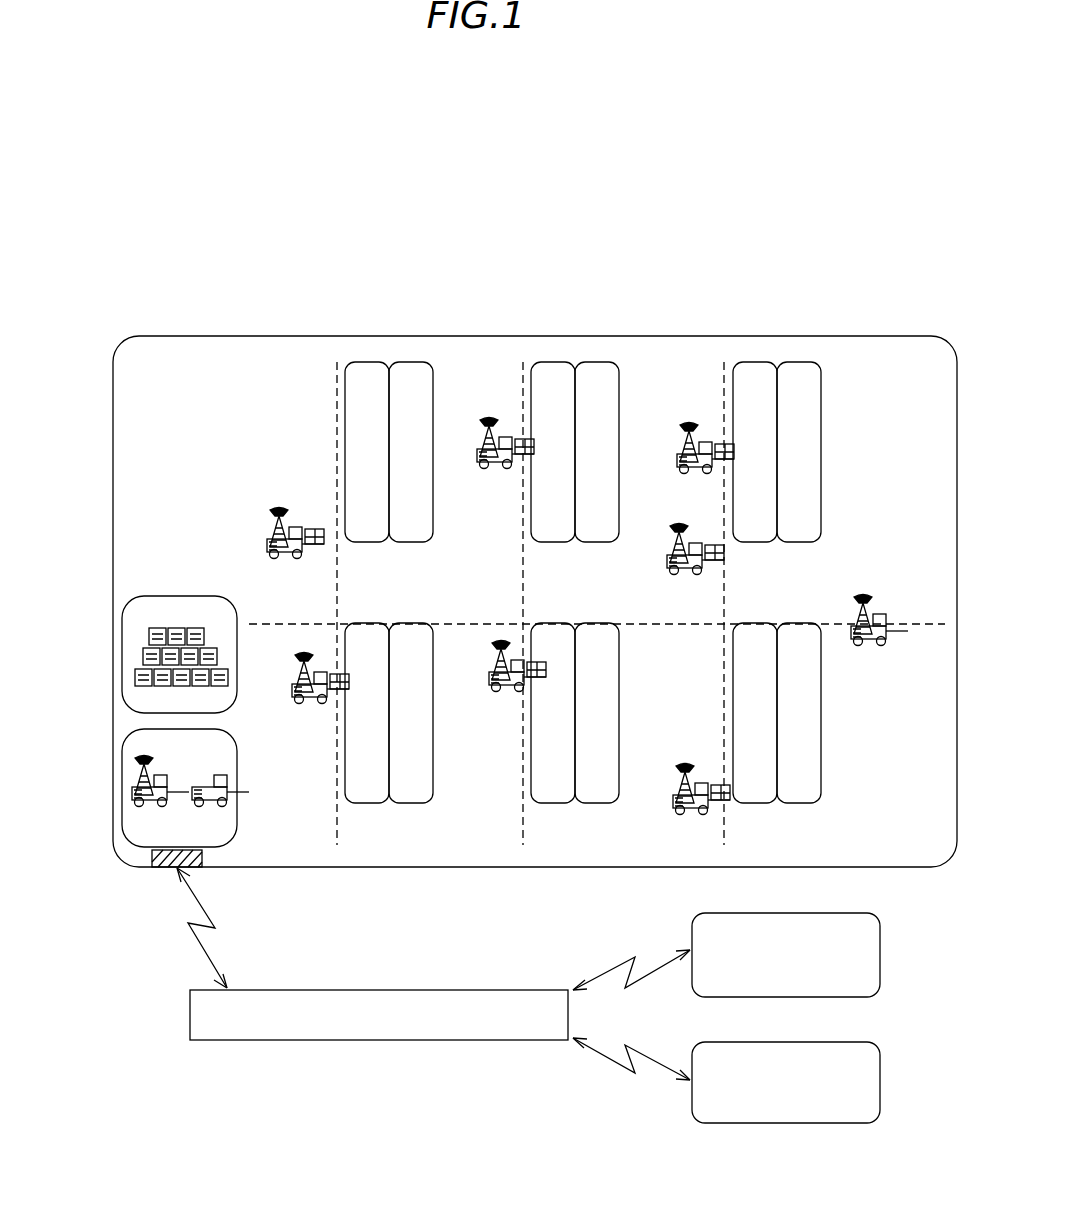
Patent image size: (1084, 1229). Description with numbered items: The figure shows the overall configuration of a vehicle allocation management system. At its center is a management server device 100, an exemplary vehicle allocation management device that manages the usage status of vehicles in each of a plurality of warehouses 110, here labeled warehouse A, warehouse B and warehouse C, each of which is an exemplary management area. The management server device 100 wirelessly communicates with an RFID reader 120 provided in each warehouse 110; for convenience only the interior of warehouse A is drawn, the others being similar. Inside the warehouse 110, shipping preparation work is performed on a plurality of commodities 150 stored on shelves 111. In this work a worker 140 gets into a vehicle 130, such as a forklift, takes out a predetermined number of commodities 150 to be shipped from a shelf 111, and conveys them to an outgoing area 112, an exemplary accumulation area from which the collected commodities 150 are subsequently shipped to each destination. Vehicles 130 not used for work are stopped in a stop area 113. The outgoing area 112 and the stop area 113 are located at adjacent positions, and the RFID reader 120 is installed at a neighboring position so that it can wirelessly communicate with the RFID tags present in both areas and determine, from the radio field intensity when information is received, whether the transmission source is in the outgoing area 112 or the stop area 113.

The management server device 100 is at (323, 1041).
The warehouse 110 is at (670, 336).
The shelf 111 is at (403, 362).
The outgoing area 112 is at (143, 654).
The stop area 113 is at (146, 788).
The RFID reader 120 is at (197, 866).
The vehicle 130 is at (145, 805).
The worker 140 is at (136, 756).
The commodities 150 is at (135, 685).